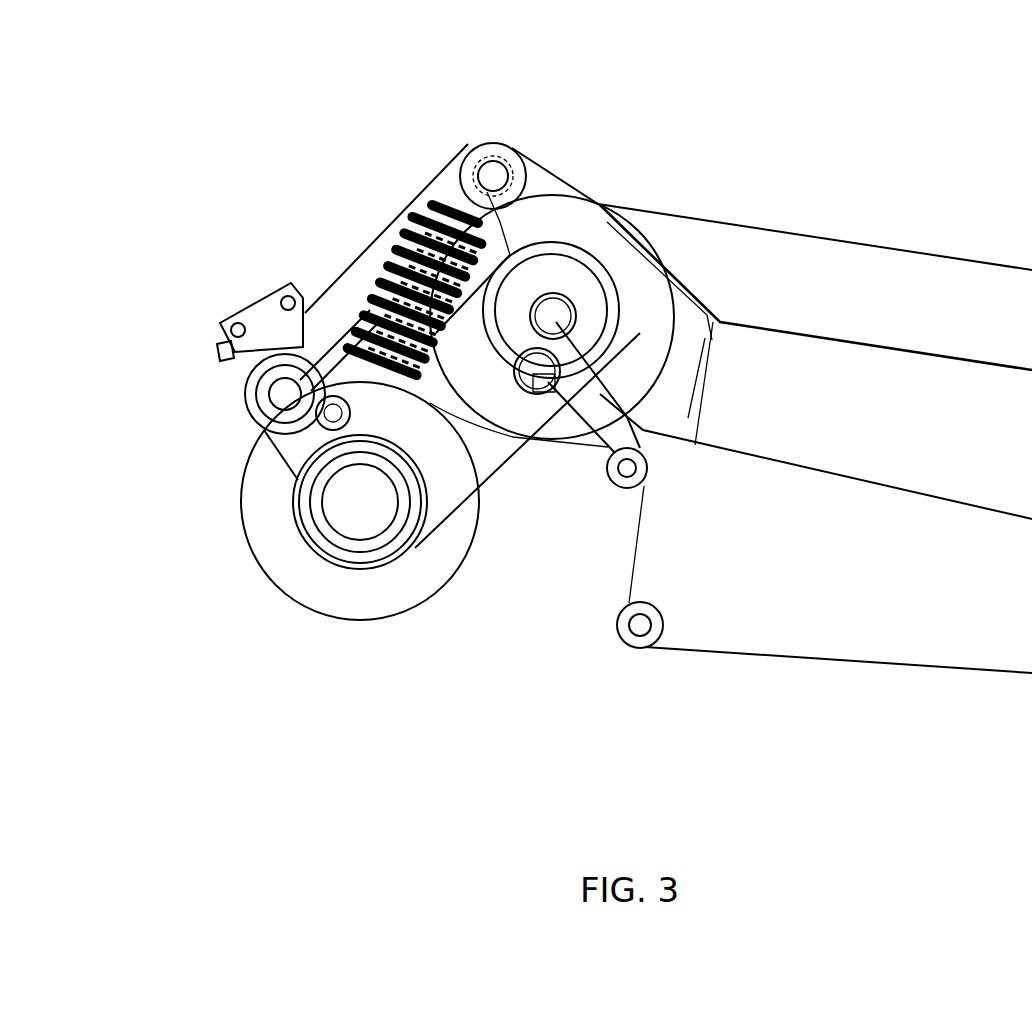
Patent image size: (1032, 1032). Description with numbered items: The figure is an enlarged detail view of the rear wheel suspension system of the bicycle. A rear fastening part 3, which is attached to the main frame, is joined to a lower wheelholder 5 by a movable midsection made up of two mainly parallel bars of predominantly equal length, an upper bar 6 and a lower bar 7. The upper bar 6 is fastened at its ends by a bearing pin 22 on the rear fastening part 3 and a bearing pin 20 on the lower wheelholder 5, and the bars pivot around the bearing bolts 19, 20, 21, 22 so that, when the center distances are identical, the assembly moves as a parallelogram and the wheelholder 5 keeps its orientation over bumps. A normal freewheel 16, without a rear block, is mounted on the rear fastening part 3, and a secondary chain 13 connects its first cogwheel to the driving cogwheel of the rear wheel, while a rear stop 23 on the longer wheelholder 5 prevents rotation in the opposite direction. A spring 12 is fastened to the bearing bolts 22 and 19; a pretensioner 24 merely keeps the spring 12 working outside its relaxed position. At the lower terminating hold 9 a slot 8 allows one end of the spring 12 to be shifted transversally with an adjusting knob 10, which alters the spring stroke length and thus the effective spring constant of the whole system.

The rear fastening part 3 is at (695, 345).
The lower wheelholder 5 is at (262, 322).
The upper bar 6 is at (357, 283).
The lower bar 7 is at (480, 440).
The slot 8 is at (268, 413).
The lower terminating hold 9 is at (270, 428).
The adjusting knob 10 is at (266, 390).
The spring 12 is at (393, 267).
The secondary chain 13 is at (563, 440).
The freewheel 16 is at (588, 240).
The bearing bolt 19 is at (360, 500).
The bearing pin 20 is at (283, 396).
The bearing bolt 21 is at (640, 458).
The bearing pin 22 is at (494, 176).
The rear stop 23 is at (348, 562).
The pretensioner 24 is at (338, 340).